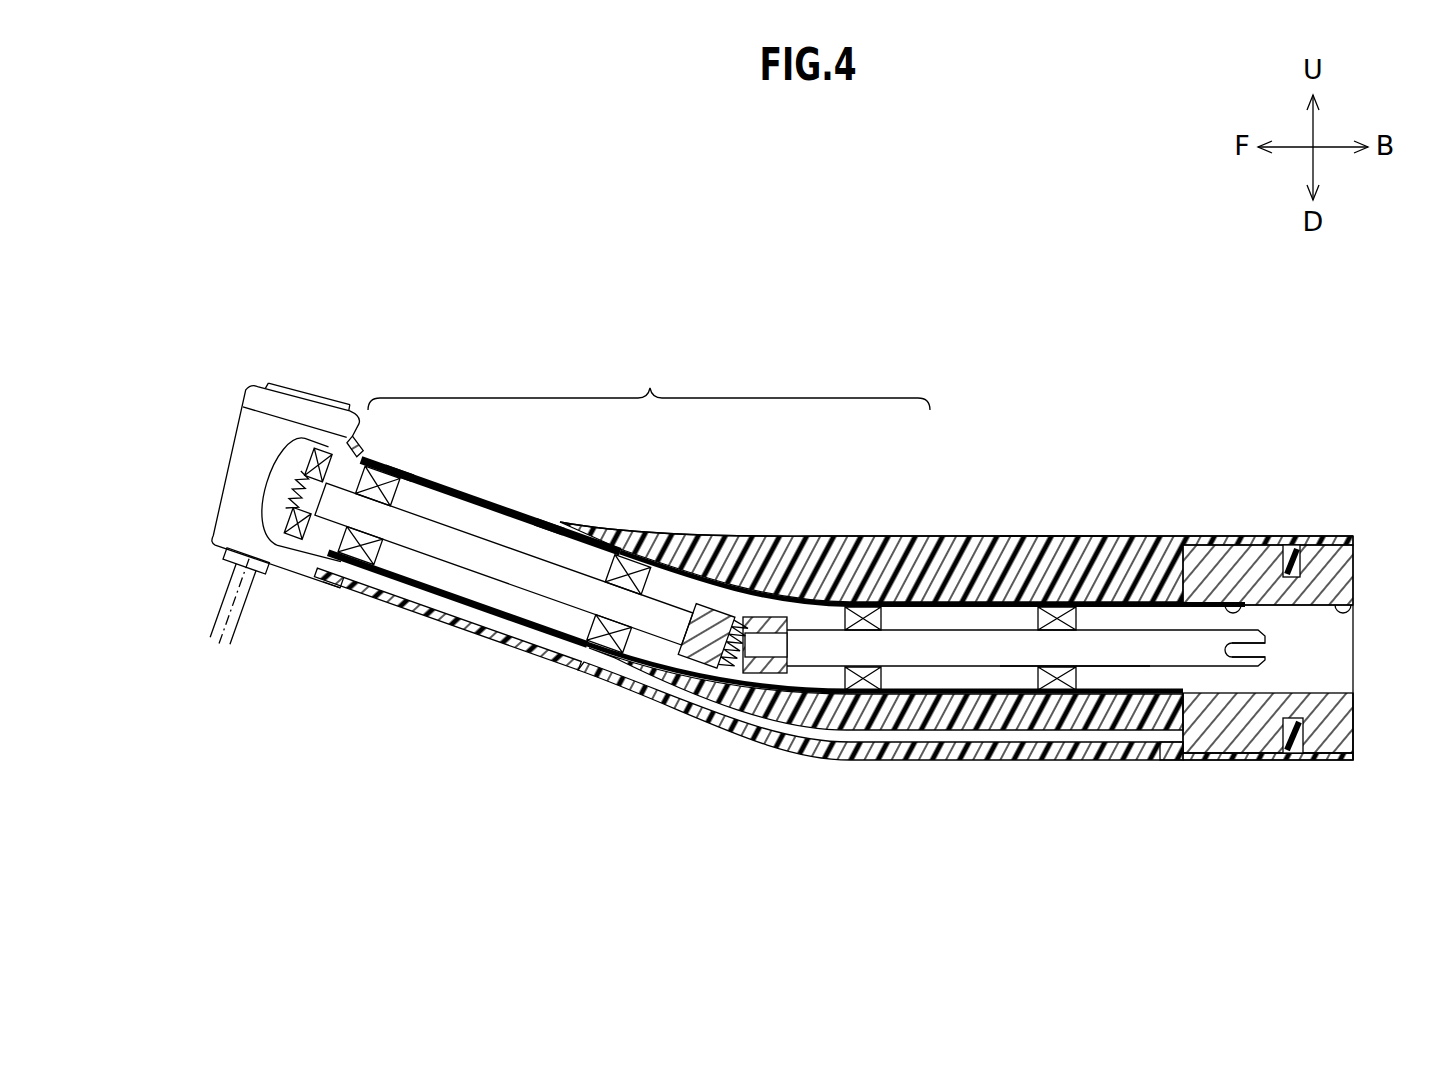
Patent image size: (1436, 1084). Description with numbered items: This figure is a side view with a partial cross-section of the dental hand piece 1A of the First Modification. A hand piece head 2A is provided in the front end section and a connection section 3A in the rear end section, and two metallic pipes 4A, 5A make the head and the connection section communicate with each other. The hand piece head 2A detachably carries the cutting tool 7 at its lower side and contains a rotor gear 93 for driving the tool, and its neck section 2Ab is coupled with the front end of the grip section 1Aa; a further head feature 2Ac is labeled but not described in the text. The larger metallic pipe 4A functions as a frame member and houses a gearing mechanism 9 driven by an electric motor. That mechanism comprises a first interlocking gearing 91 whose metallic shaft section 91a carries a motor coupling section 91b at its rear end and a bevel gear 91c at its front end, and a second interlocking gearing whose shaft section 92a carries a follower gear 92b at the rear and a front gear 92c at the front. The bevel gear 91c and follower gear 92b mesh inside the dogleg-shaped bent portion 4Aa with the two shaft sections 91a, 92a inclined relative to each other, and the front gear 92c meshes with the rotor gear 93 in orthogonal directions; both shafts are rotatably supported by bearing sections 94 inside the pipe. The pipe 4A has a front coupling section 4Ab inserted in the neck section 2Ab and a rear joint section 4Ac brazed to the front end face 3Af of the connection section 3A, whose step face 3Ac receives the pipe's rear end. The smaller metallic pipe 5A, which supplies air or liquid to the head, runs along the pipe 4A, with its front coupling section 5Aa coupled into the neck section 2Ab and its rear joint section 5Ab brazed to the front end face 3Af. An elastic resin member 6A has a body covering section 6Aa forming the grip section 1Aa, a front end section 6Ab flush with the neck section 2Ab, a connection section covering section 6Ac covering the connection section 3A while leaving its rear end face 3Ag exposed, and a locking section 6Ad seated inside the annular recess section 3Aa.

The dental hand piece 1A is at (824, 238).
The grip section 1Aa is at (968, 535).
The hand piece head 2A is at (232, 508).
The neck section 2Ab is at (245, 584).
The head rear connection 2Ac is at (345, 592).
The connection section 3A is at (1343, 570).
The annular recess section 3Aa is at (1292, 545).
The step face 3Ac is at (1245, 600).
The front end face 3Af is at (1178, 732).
The rear end face 3Ag is at (1355, 703).
The metallic pipe 4A is at (1000, 602).
The bent portion 4Aa is at (733, 688).
The front coupling section 4Ab is at (366, 458).
The rear joint section 4Ac is at (1180, 600).
The metallic pipe 5A is at (928, 745).
The front coupling section 5Aa is at (352, 592).
The rear joint section 5Ab is at (1181, 760).
The elastic resin member 6A is at (1112, 537).
The body covering section 6Aa is at (1057, 536).
The front end section 6Ab is at (322, 590).
The connection section covering section 6Ac is at (1330, 762).
The locking section 6Ad is at (1295, 735).
The cutting tool 7 is at (255, 658).
The gearing mechanism 9 is at (649, 381).
The first interlocking gearing 91 is at (930, 650).
The shaft section 91a is at (1080, 656).
The motor coupling section 91b is at (1255, 648).
The bevel gear 91c is at (765, 615).
The shaft section 92a is at (492, 556).
The follower gear 92b is at (712, 605).
The front gear 92c is at (552, 522).
The rotor gear 93 is at (356, 433).
The bearing sections 94 is at (603, 614).